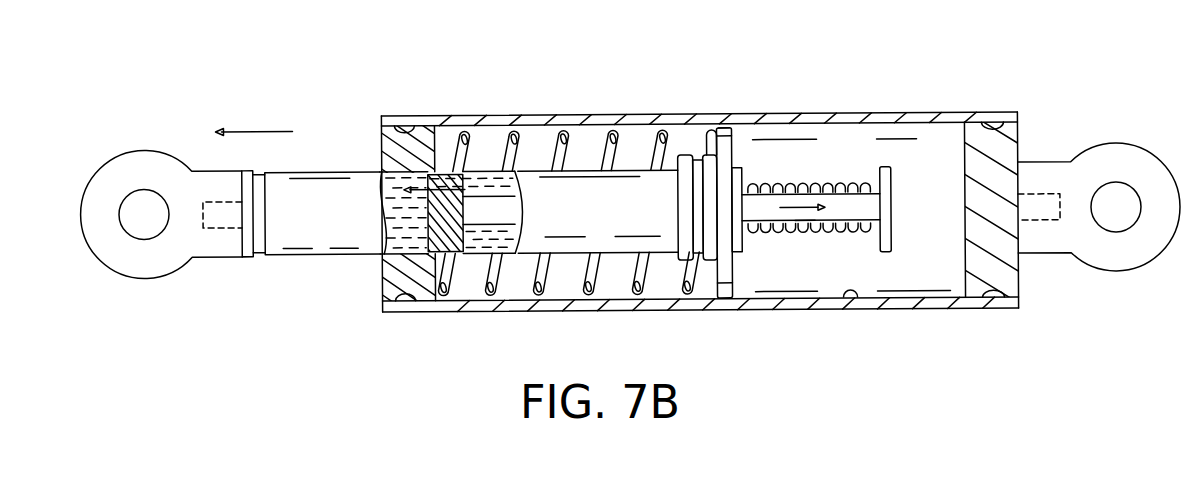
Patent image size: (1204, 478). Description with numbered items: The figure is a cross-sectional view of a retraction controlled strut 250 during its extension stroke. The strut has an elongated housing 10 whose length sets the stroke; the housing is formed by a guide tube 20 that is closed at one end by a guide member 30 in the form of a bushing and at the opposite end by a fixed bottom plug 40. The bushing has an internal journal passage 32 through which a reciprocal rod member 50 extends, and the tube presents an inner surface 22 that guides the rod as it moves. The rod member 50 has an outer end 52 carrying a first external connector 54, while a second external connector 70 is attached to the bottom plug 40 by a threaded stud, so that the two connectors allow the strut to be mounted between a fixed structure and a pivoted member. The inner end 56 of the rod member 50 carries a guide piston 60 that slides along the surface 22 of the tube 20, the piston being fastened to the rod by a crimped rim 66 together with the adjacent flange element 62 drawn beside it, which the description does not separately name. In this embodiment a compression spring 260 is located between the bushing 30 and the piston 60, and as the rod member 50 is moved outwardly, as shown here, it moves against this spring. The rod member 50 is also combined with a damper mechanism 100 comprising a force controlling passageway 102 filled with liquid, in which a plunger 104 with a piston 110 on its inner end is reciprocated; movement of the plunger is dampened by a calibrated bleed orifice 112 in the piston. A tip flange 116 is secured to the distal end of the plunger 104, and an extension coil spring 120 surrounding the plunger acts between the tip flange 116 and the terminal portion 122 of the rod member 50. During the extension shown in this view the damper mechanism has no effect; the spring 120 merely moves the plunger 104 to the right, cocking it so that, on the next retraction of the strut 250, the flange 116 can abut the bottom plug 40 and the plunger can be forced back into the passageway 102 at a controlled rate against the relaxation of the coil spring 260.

The housing 10 is at (777, 113).
The guide tube 20 is at (850, 114).
The inner surface 22 is at (843, 300).
The guide member 30 is at (373, 141).
The journal passage 32 is at (383, 241).
The bottom plug 40 is at (1020, 135).
The rod member 50 is at (298, 259).
The outer end 52 is at (250, 255).
The first external connector 54 is at (112, 268).
The inner end 56 is at (742, 128).
The guide piston 60 is at (725, 298).
The flange 62 is at (684, 262).
The crimped rim 66 is at (706, 262).
The second external connector 70 is at (1148, 152).
The damper mechanism 100 is at (767, 237).
The force controlling passageway 102 is at (505, 250).
The plunger 104 is at (805, 222).
The piston 110 is at (455, 252).
The calibrated bleed orifice 112 is at (443, 172).
The tip flange 116 is at (884, 254).
The extension coil spring 120 is at (842, 182).
The terminal portion 122 is at (742, 170).
The retraction controlled strut 250 is at (565, 99).
The compression spring 260 is at (655, 133).